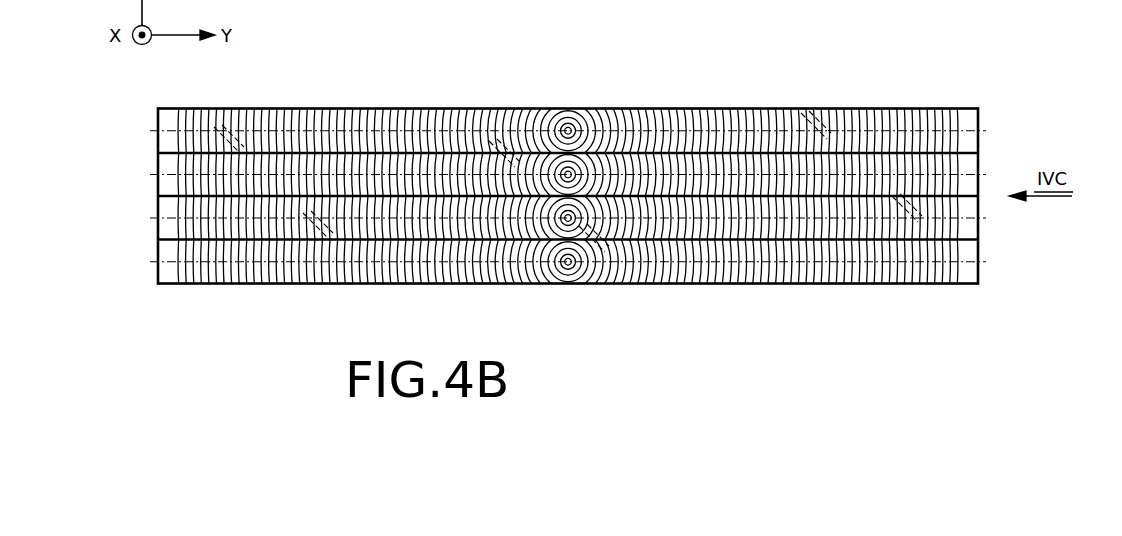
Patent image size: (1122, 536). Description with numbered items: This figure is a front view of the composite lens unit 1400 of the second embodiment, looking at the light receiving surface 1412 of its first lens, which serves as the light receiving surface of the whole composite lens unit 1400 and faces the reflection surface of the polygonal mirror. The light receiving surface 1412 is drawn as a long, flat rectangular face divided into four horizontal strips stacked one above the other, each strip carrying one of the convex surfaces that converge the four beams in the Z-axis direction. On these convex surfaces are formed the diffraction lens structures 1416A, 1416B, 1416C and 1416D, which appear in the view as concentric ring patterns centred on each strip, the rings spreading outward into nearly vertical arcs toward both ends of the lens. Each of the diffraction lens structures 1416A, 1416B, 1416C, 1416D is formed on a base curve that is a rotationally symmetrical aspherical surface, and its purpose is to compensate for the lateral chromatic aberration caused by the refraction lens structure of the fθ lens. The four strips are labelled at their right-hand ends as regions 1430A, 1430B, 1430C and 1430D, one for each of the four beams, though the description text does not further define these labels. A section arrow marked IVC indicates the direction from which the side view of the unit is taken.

The composite lens unit 1400 is at (563, 77).
The light receiving surface 1412 is at (790, 118).
The diffraction lens structure 1416A is at (208, 265).
The diffraction lens structure 1416B is at (210, 218).
The diffraction lens structure 1416C is at (211, 175).
The diffraction lens structure 1416D is at (207, 130).
The transducer row 1430A is at (967, 268).
The transducer row 1430B is at (967, 223).
The transducer row 1430C is at (967, 184).
The transducer row 1430D is at (967, 138).